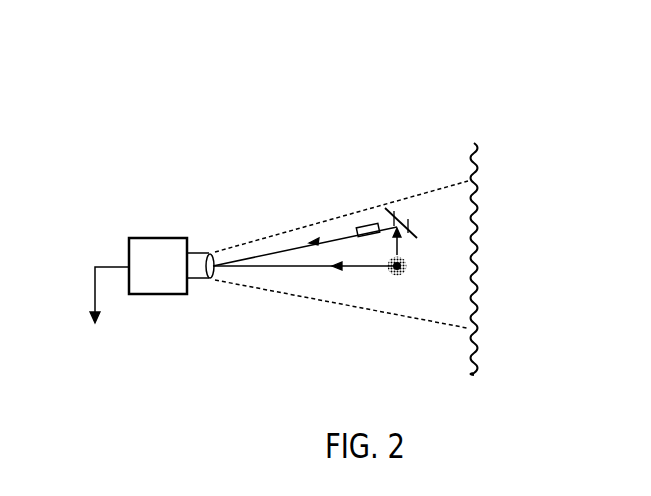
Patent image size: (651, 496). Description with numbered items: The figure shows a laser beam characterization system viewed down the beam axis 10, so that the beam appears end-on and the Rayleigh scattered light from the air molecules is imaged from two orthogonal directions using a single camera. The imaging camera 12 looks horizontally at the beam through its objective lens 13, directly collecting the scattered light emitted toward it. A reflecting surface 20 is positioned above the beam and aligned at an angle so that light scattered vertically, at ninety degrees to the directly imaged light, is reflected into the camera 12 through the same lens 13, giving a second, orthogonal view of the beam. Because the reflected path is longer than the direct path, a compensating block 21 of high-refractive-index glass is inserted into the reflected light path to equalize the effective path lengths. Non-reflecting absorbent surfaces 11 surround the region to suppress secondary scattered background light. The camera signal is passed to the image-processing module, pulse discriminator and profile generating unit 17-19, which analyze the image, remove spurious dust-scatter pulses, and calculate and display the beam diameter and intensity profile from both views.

The beam axis 10 is at (401, 278).
The non-reflecting absorbent surfaces 11 is at (475, 173).
The imaging camera 12 is at (160, 294).
The objective lens 13 is at (214, 252).
The image-processing module, pulse discriminator and profile generating unit 17-19 is at (100, 305).
The reflecting surface 20 is at (410, 220).
The compensating block 21 is at (360, 213).